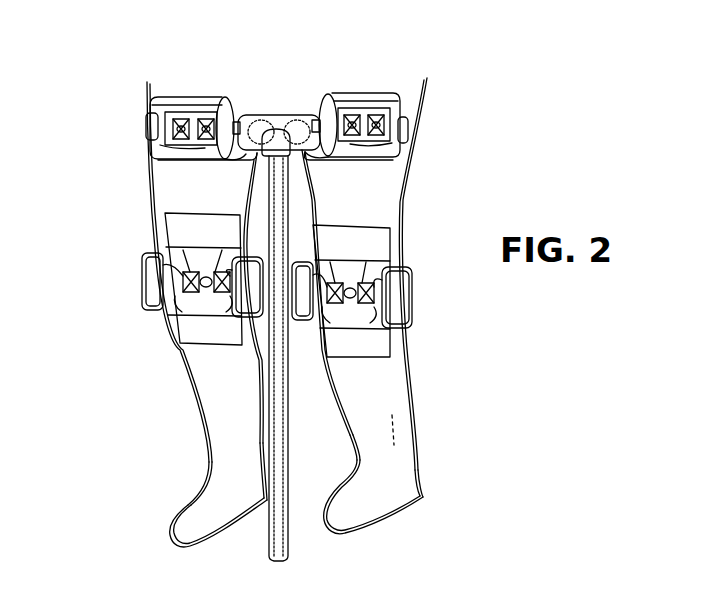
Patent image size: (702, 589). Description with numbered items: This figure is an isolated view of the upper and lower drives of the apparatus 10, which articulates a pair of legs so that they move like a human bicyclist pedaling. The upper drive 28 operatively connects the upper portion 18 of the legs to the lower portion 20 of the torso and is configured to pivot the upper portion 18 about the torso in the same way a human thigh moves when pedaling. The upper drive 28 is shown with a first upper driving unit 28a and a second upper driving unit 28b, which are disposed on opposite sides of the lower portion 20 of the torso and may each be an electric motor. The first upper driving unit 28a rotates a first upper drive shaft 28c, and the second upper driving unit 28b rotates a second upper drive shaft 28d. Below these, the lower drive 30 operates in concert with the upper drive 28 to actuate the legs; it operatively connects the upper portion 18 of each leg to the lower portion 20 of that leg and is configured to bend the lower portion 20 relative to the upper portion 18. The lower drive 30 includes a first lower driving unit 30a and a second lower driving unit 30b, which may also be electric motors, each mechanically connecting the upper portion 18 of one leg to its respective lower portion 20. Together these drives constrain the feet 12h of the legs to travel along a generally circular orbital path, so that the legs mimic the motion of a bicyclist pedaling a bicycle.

The apparatus 10 is at (470, 130).
The feet 12h is at (197, 517).
The upper portion of the legs 18 is at (163, 177).
The lower portion 20 is at (208, 381).
The upper drive 28 is at (235, 84).
The first upper driving unit 28a is at (185, 103).
The second upper driving unit 28b is at (396, 105).
The first upper drive shaft 28c is at (235, 155).
The second upper drive shaft 28d is at (310, 155).
The lower drive 30 is at (179, 259).
The first lower driving unit 30a is at (185, 280).
The second lower driving unit 30b is at (377, 293).